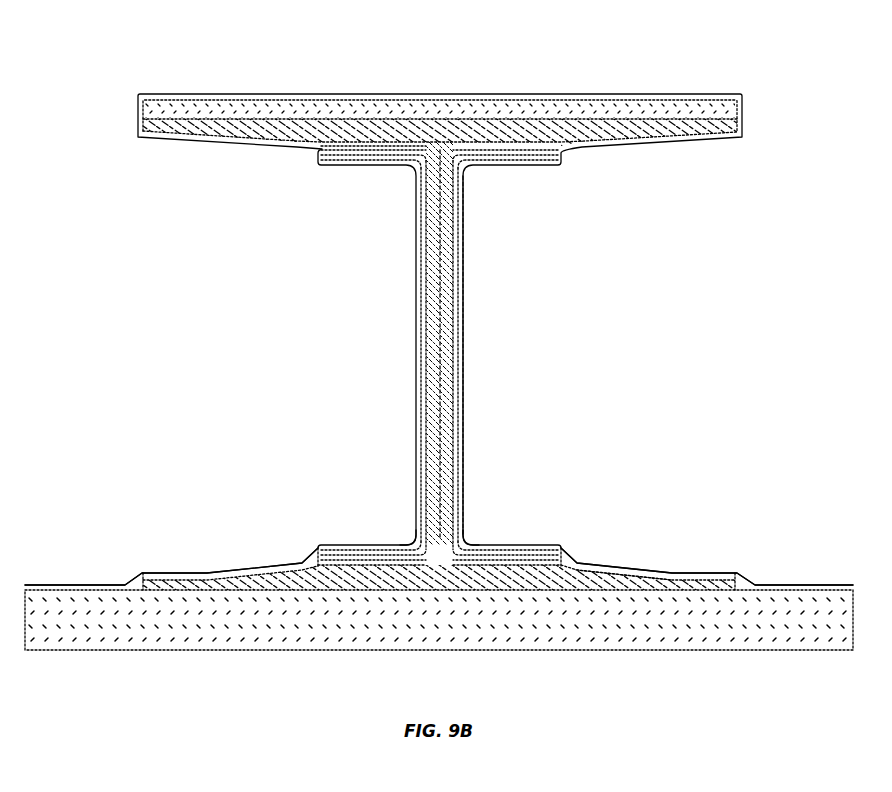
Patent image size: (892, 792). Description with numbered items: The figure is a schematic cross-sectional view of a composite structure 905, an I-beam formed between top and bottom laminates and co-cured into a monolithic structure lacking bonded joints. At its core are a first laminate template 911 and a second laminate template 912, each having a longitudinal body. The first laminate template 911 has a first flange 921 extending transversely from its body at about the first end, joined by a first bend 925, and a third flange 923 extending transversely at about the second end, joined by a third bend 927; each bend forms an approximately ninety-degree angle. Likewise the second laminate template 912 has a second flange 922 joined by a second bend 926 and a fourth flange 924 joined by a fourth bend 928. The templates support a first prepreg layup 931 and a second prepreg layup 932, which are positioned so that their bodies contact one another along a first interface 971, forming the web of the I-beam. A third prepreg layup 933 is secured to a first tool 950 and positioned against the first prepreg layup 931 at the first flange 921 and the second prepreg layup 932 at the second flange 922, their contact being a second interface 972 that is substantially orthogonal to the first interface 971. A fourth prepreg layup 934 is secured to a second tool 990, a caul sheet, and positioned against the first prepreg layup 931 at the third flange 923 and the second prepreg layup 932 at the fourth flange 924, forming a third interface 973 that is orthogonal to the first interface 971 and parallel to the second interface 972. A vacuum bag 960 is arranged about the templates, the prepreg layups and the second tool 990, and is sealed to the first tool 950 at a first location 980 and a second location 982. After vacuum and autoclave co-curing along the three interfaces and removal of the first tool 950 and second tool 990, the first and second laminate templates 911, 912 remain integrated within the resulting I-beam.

The composite structure 905 is at (108, 75).
The second tool 990 is at (381, 103).
The fourth prepreg layup 934 is at (635, 125).
The third flange 923 is at (318, 158).
The fourth flange 924 is at (558, 160).
The third interface 973 is at (370, 150).
The third bend 927 is at (407, 178).
The fourth bend 928 is at (470, 170).
The first laminate template 911 is at (430, 288).
The second laminate template 912 is at (462, 328).
The vacuum bag 960 is at (415, 462).
The first interface 971 is at (443, 452).
The first prepreg layup 931 is at (383, 550).
The second prepreg layup 932 is at (515, 547).
The second interface 972 is at (365, 547).
The first bend 925 is at (410, 535).
The second bend 926 is at (470, 538).
The first flange 921 is at (325, 552).
The second flange 922 is at (535, 550).
The third prepreg layup 933 is at (607, 578).
The first location 980 is at (78, 588).
The second location 982 is at (806, 588).
The first tool 950 is at (432, 630).